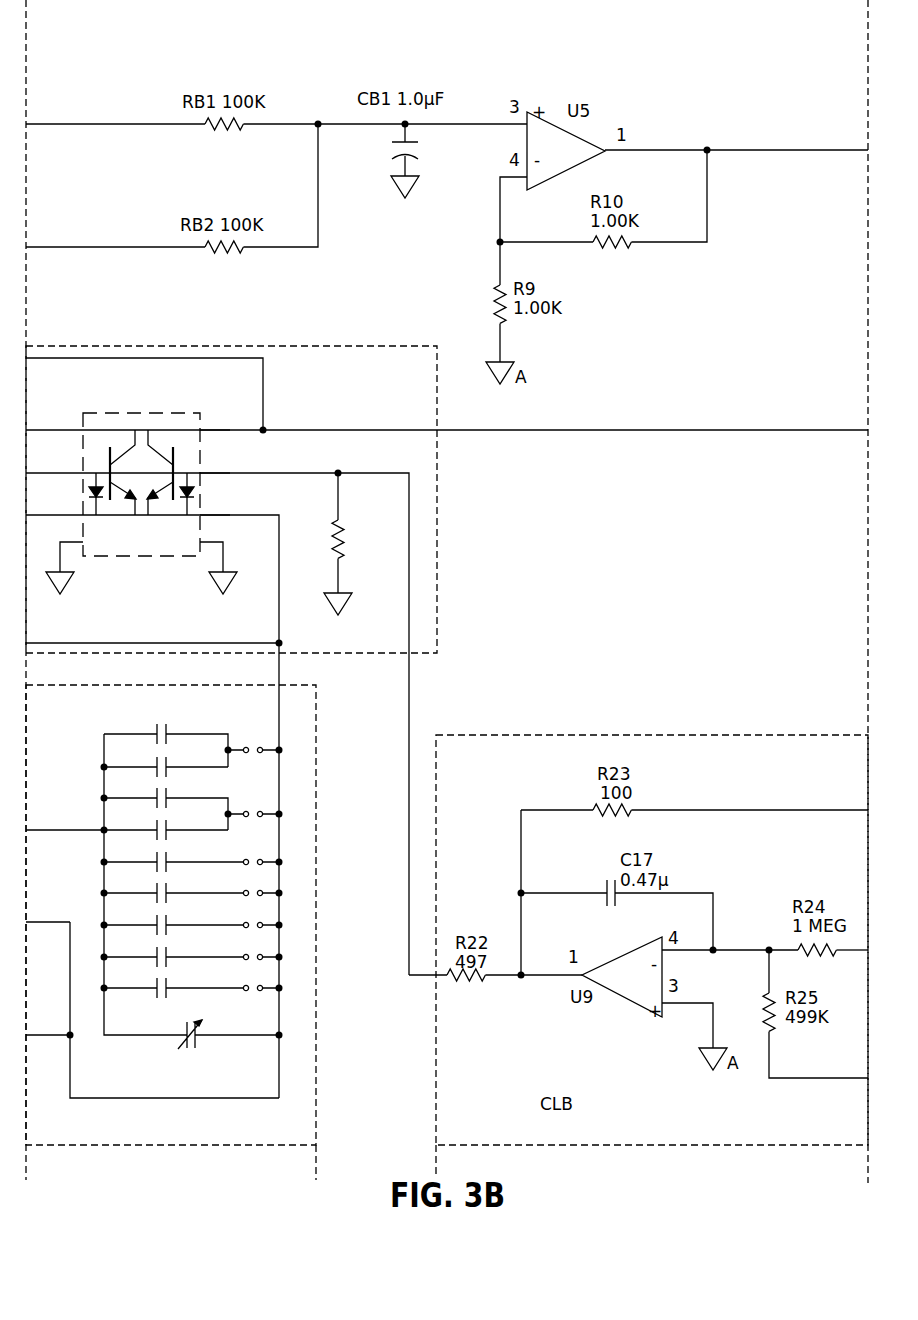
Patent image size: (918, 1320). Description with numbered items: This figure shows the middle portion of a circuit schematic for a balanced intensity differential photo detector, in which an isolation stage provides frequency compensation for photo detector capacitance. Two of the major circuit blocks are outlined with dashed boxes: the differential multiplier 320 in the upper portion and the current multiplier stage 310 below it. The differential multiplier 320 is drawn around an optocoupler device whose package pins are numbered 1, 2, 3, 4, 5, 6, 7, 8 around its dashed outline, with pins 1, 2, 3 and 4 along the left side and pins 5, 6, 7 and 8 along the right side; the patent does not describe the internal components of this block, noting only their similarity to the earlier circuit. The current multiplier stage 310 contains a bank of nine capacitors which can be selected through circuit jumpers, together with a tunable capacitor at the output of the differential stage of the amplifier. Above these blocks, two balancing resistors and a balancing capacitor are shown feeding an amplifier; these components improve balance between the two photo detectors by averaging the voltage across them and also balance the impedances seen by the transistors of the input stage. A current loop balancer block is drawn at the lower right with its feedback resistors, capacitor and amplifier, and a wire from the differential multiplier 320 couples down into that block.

The current multiplier stage 310 is at (325, 713).
The differential multiplier 320 is at (447, 722).
The optocoupler U2 pin 1 is at (54, 419).
The optocoupler U2 pin 2 is at (54, 462).
The optocoupler U2 pin 3 is at (54, 504).
The optocoupler U2 pin 4 is at (64, 557).
The optocoupler U2 pin 5 is at (218, 557).
The optocoupler U2 pin 6 is at (215, 504).
The optocoupler U2 pin 7 is at (215, 462).
The optocoupler U2 pin 8 is at (215, 419).